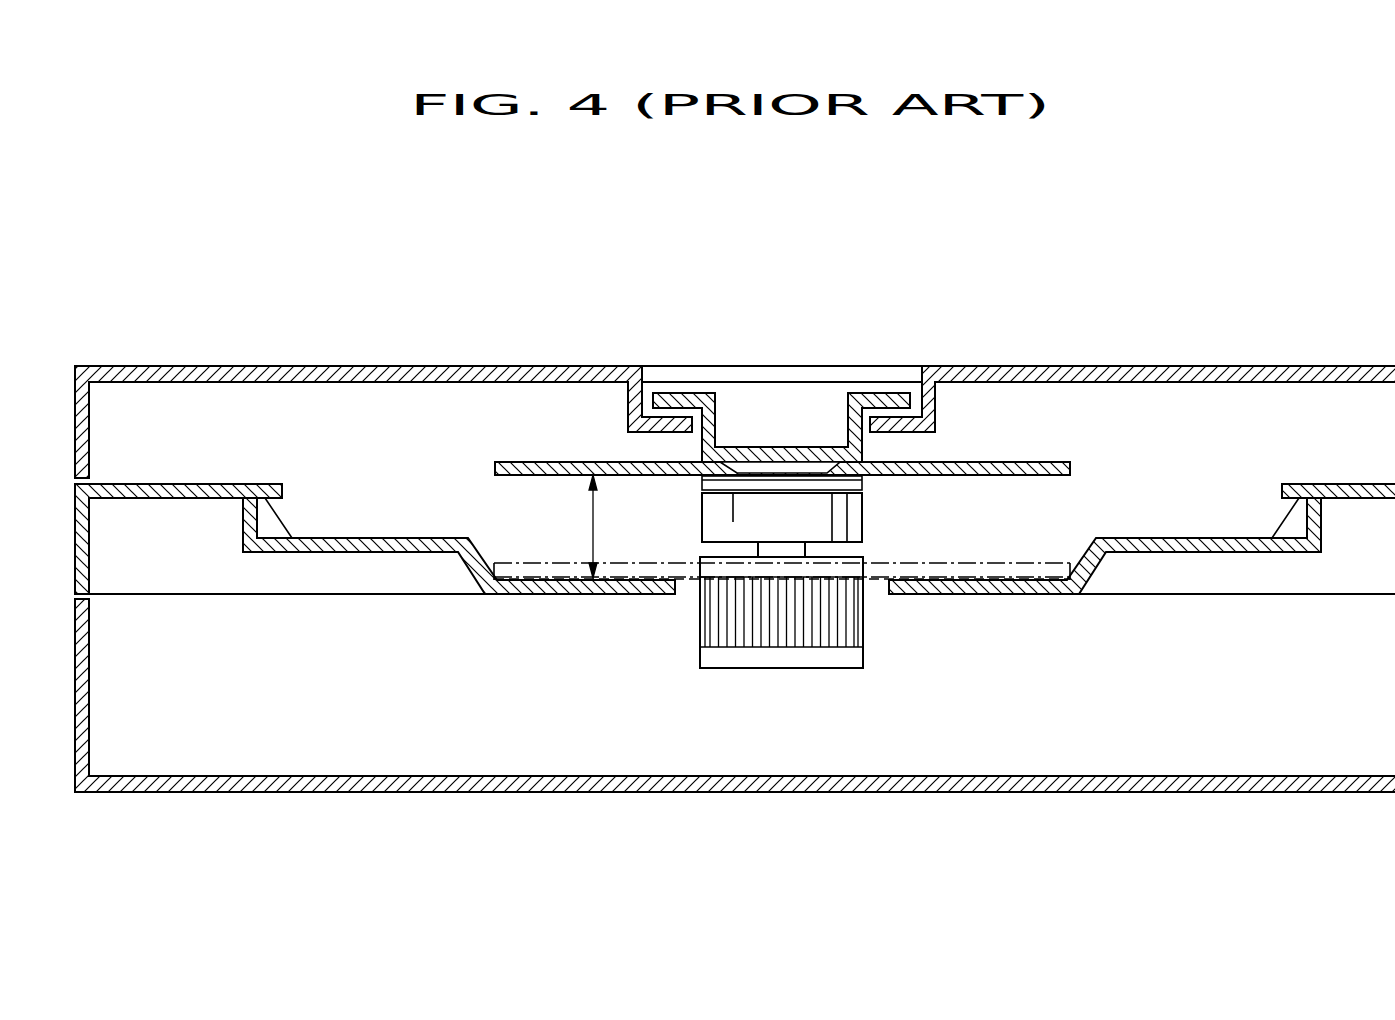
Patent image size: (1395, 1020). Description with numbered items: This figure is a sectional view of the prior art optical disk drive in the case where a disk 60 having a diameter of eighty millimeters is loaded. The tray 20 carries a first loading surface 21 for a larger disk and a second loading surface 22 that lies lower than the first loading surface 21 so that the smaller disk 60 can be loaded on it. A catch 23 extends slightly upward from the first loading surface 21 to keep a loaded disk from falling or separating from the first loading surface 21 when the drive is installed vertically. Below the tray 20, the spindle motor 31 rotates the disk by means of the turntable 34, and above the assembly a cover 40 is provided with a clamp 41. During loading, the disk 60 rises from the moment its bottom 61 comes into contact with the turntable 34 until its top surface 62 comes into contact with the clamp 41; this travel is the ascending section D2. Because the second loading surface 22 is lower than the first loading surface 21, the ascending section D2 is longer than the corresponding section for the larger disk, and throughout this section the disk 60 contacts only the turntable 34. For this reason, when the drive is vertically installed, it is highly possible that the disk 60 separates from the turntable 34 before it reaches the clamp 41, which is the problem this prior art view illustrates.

The tray 20 is at (225, 498).
The first loading surface 21 is at (393, 594).
The second loading surface 22 is at (604, 578).
The catch 23 is at (278, 483).
The spindle motor 31 is at (863, 660).
The turntable 34 is at (862, 523).
The cover 40 is at (493, 366).
The clamp 41 is at (880, 394).
The disk 60 is at (850, 465).
The bottom of the disk 61 is at (977, 477).
The top surface of the disk 62 is at (963, 461).
The ascending section D2 is at (593, 523).